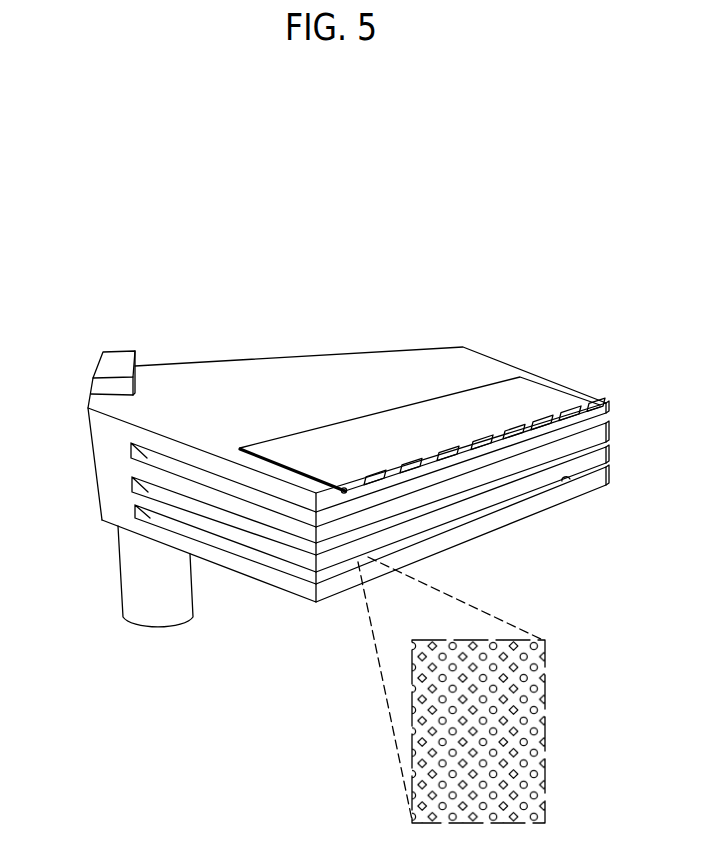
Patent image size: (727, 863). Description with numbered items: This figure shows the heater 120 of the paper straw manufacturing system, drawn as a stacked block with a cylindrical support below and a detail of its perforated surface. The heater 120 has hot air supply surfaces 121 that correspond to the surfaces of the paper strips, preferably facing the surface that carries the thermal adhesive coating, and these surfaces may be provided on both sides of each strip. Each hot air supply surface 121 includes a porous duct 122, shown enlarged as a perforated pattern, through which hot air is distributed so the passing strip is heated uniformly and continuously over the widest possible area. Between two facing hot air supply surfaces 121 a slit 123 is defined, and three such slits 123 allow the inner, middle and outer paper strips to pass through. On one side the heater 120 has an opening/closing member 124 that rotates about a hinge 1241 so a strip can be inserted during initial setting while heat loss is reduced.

The heater 120 is at (70, 264).
The hot air supply surface 121 is at (194, 479).
The porous duct 122 is at (538, 690).
The slit 123 is at (564, 479).
The opening/closing member 124 is at (545, 392).
The hinge 1241 is at (607, 405).